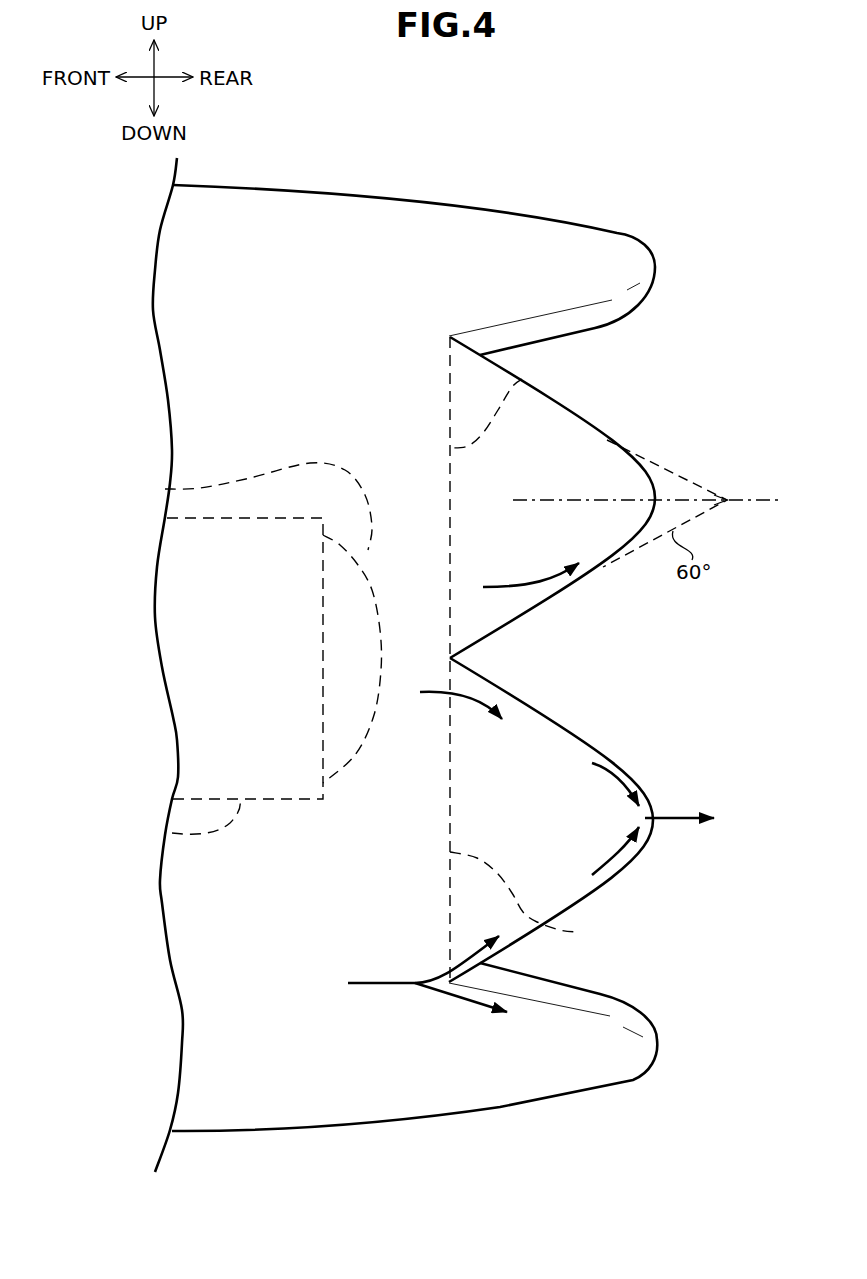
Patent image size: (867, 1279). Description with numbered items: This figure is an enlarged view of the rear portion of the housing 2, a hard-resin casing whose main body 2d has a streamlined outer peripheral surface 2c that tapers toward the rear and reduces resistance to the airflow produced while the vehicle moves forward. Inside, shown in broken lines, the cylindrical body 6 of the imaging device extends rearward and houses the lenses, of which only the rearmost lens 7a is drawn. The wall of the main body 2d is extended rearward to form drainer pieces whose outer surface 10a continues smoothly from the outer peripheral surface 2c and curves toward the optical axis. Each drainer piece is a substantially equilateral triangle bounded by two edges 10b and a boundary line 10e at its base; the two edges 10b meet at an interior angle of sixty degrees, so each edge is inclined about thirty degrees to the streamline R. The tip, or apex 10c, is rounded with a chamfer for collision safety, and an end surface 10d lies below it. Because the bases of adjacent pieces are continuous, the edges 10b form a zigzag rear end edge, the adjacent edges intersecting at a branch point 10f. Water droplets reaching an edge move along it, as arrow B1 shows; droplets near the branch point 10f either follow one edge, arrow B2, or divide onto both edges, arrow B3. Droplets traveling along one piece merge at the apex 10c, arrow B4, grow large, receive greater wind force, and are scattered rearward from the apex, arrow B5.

The housing 2 is at (291, 181).
The outer peripheral surface 2c is at (260, 368).
The main body 2d is at (124, 341).
The cylindrical body 6 is at (163, 838).
The rearmost lens 7a is at (167, 490).
The outer surface 10a is at (522, 240).
The edge 10b is at (575, 306).
The apex 10c is at (663, 261).
The end surface 10d is at (612, 313).
The boundary line 10e is at (524, 378).
The branch point 10f is at (453, 333).
The arrow B1 is at (515, 582).
The arrow B2 is at (444, 699).
The arrow B3 is at (412, 974).
The arrow B4 is at (598, 824).
The arrow B5 is at (695, 822).
The streamline R is at (656, 503).